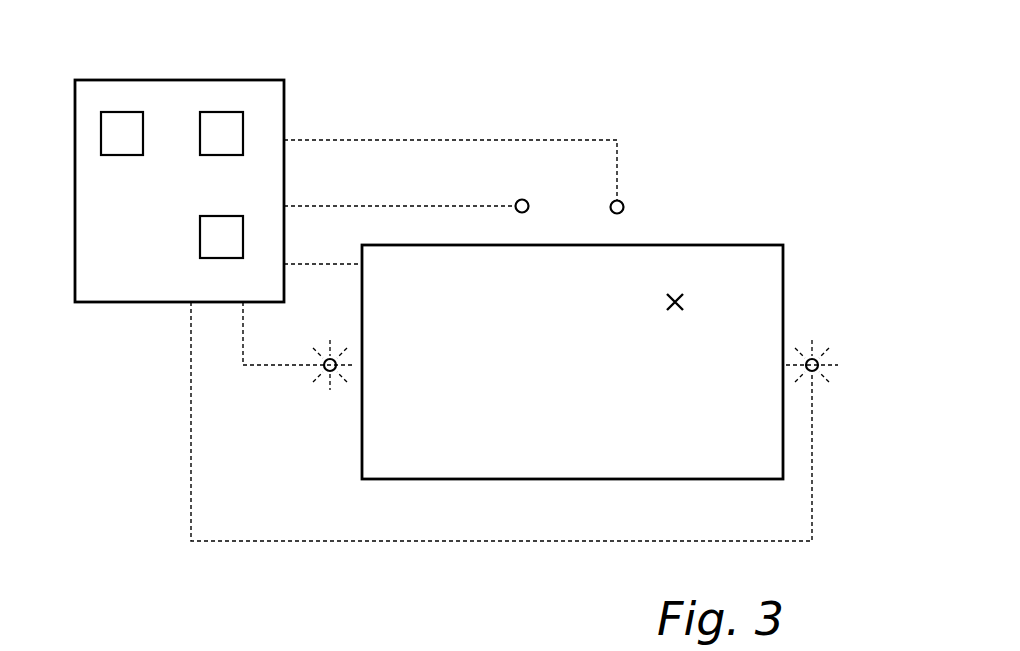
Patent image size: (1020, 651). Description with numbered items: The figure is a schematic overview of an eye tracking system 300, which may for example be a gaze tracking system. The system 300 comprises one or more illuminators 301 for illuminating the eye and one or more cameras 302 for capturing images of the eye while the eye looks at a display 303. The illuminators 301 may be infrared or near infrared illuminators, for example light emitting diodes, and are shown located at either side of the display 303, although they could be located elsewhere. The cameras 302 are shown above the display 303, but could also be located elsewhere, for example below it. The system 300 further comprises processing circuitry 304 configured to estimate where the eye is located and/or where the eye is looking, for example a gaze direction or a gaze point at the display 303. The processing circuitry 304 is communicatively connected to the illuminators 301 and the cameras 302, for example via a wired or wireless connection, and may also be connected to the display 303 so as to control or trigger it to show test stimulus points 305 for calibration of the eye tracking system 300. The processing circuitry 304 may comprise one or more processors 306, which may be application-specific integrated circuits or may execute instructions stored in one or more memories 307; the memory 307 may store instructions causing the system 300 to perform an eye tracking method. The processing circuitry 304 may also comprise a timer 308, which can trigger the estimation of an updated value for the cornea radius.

The eye tracking system 300 is at (135, 485).
The illuminator 301 is at (328, 372).
The camera 302 is at (522, 199).
The display 303 is at (785, 263).
The processing circuitry 304 is at (195, 80).
The test stimulus point 305 is at (678, 295).
The processor 306 is at (232, 112).
The memory 307 is at (200, 238).
The timer 308 is at (132, 112).